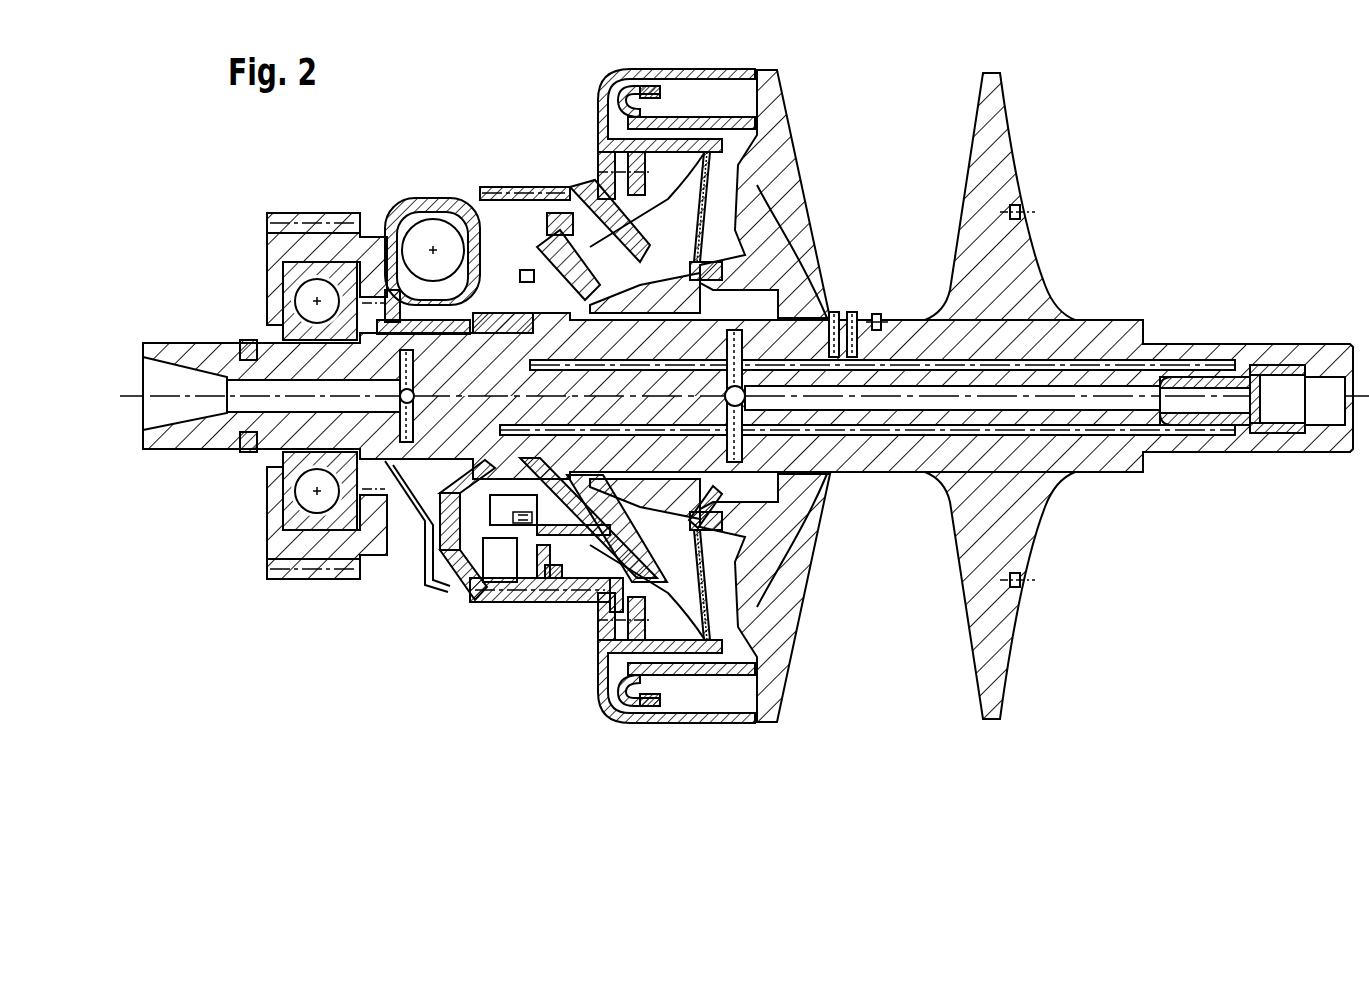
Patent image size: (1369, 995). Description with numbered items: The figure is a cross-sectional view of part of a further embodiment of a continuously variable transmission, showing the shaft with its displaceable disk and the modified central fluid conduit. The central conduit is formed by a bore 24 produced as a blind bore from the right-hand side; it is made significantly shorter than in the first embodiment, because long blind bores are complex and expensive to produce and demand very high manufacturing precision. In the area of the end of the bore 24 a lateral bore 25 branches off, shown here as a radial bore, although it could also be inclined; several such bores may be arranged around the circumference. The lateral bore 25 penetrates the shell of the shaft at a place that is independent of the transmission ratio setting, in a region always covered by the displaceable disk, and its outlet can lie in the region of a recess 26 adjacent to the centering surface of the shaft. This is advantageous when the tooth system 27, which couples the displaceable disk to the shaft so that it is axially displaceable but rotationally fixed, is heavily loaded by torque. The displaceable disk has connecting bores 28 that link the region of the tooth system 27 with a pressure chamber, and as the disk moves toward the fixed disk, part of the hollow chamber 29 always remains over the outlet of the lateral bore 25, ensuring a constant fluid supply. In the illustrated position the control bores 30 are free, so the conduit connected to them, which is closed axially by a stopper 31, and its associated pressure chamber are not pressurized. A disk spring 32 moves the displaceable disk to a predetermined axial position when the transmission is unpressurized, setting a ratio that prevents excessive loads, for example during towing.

The bore 24 is at (1115, 405).
The lateral bore 25 is at (755, 300).
The recess 26 is at (800, 493).
The tooth system 27 is at (688, 522).
The connecting bores 28 is at (760, 152).
The chamber 29 is at (790, 215).
The control bores 30 is at (840, 318).
The stopper 31 is at (1210, 363).
The disk spring 32 is at (710, 560).